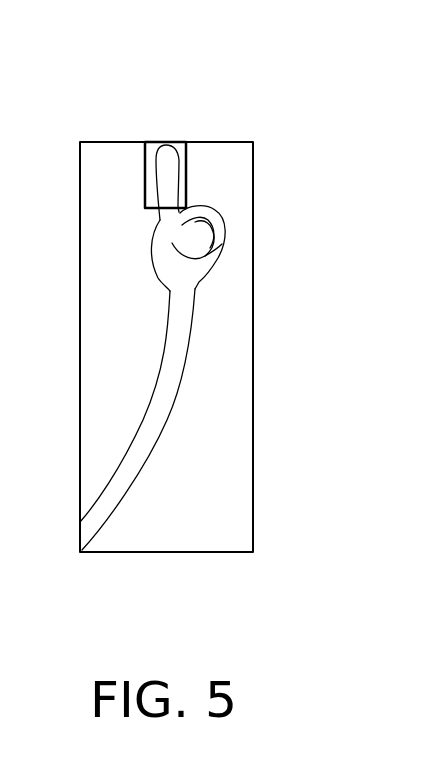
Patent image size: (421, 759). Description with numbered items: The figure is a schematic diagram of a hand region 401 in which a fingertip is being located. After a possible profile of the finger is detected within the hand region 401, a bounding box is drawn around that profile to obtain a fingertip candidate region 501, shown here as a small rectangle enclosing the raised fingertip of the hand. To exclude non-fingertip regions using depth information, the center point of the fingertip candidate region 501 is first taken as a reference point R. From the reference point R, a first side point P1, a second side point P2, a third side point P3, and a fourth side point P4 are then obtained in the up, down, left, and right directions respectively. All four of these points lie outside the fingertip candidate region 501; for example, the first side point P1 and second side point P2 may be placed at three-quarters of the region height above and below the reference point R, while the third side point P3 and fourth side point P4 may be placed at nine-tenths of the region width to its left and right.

The hand region 401 is at (253, 155).
The fingertip candidate region 501 is at (186, 153).
The reference point R is at (165, 172).
The first side point P1 is at (167, 119).
The second side point P2 is at (172, 227).
The third side point P3 is at (130, 172).
The fourth side point P4 is at (202, 173).